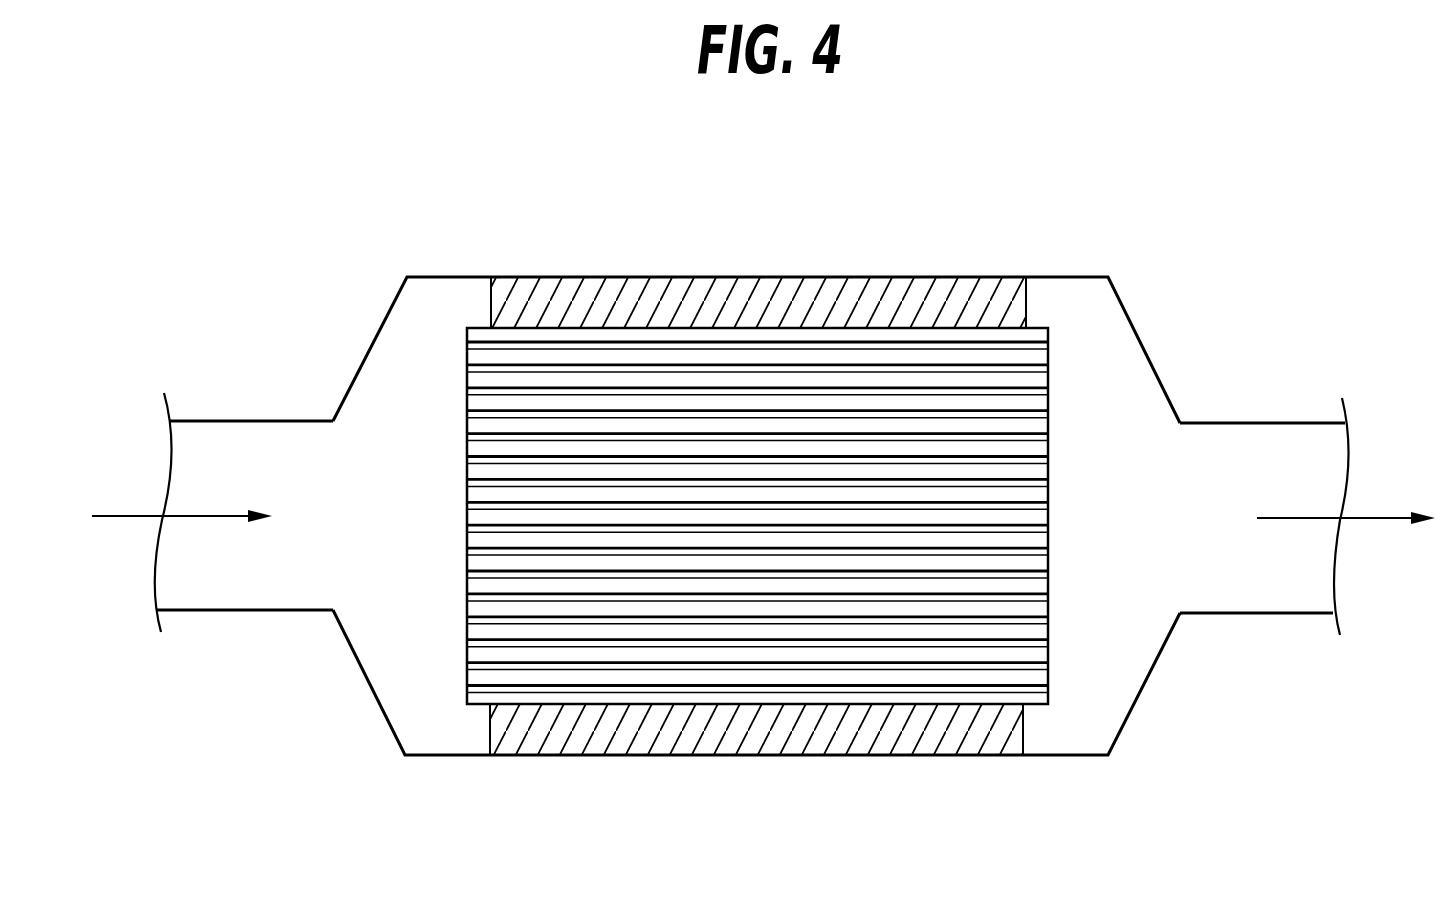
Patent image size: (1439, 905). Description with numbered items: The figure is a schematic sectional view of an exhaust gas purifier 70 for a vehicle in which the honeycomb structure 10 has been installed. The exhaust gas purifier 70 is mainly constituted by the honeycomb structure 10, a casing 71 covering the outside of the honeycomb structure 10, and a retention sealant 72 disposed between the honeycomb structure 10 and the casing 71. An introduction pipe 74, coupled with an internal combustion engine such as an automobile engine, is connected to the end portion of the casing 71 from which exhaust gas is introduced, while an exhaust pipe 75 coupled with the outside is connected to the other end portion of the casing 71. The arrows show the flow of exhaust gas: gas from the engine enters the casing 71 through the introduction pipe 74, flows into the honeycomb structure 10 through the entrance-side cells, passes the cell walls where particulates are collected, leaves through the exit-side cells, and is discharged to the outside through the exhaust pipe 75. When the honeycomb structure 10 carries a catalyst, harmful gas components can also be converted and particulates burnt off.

The honeycomb structure 10 is at (1080, 377).
The exhaust gas purifier 70 is at (767, 494).
The casing 71 is at (1050, 758).
The retention sealant 72 is at (600, 297).
The introduction pipe 74 is at (228, 437).
The exhaust pipe 75 is at (1274, 437).